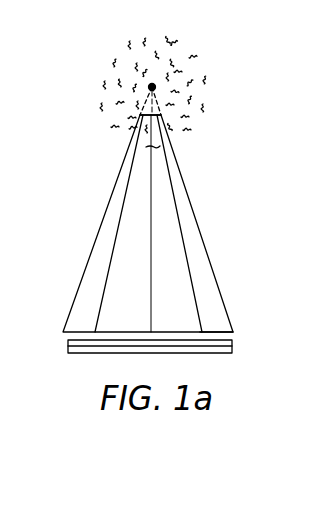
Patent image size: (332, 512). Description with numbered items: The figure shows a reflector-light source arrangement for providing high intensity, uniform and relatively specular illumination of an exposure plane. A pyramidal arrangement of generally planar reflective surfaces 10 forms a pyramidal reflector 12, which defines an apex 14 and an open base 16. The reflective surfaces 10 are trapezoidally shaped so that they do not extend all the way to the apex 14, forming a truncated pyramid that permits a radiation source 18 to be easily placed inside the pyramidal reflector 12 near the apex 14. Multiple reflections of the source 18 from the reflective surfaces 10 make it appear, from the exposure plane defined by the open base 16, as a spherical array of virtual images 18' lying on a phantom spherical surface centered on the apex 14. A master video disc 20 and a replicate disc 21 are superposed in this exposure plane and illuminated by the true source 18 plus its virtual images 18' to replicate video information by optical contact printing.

The reflective surfaces 10 is at (170, 253).
The pyramidal reflector 12 is at (100, 187).
The apex 14 is at (155, 85).
The open base 16 is at (226, 331).
The radiation source 18 is at (175, 143).
The virtual images 18' is at (180, 83).
The master video disc 20 is at (68, 342).
The replicate disc 21 is at (82, 353).